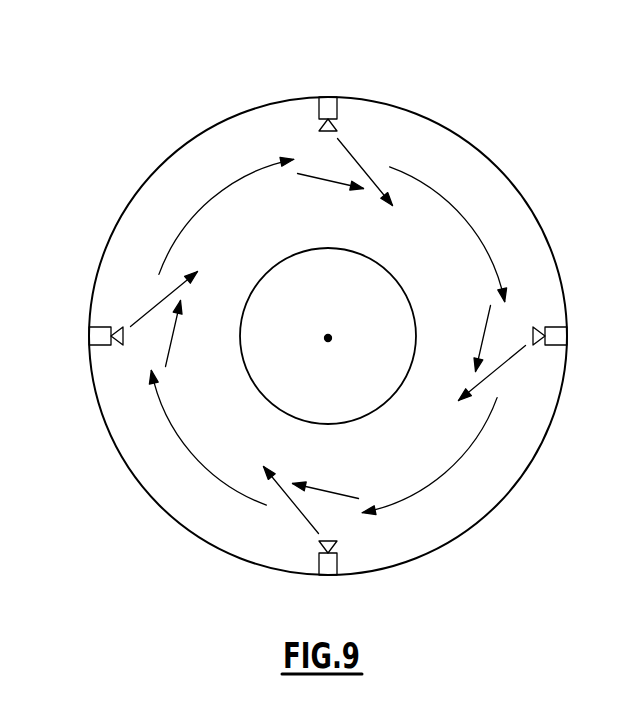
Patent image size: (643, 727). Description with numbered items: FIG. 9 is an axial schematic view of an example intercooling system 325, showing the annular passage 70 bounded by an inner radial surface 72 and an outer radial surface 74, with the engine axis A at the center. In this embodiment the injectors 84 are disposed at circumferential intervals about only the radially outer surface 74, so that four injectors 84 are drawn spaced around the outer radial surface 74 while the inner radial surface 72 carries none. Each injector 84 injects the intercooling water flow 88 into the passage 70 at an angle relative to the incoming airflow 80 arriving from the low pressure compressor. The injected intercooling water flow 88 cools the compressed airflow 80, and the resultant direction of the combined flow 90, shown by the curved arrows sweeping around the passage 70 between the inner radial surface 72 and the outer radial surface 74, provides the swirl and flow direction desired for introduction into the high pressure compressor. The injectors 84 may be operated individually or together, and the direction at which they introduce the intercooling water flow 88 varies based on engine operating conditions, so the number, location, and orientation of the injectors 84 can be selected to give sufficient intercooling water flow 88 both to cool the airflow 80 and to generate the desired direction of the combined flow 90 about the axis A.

The intercooling system 325 is at (518, 82).
The passage 70 is at (497, 162).
The inner radial surface 72 is at (422, 344).
The outer radial surface 74 is at (552, 393).
The airflow 80 is at (172, 338).
The injectors 84 is at (333, 110).
The intercooling water flow 88 is at (158, 303).
The combined flow 90 is at (233, 180).
The axis A is at (330, 336).